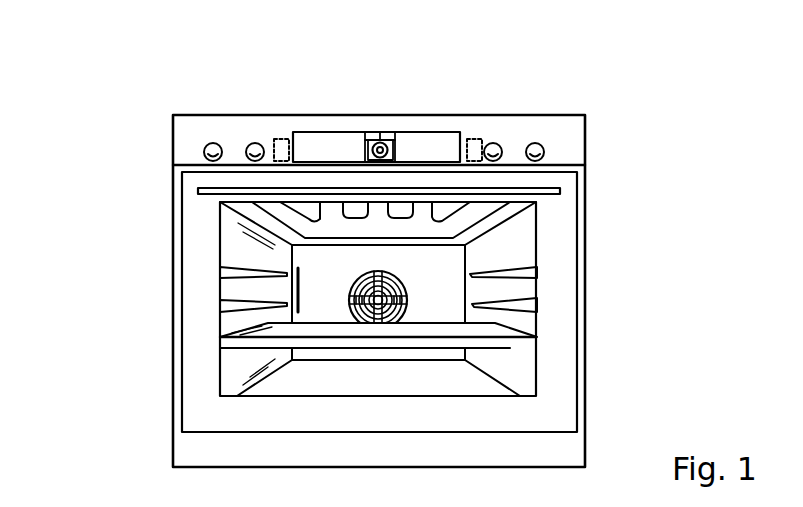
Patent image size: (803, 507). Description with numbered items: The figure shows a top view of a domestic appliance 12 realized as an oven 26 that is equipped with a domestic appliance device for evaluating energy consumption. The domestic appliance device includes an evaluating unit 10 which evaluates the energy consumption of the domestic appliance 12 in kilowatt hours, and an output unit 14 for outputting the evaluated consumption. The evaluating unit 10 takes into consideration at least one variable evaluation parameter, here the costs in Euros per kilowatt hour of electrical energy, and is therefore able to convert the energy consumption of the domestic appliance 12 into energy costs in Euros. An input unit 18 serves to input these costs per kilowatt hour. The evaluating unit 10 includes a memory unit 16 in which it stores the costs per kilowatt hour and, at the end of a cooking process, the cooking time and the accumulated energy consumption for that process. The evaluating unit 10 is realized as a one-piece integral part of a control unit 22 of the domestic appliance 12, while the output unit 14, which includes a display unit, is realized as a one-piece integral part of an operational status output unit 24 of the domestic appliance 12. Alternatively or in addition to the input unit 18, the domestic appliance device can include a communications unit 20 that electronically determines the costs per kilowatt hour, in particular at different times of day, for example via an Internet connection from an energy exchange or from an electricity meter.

The evaluating unit 10 is at (270, 115).
The domestic appliance 12 is at (145, 143).
The output unit 14 is at (332, 145).
The memory unit 16 is at (268, 146).
The input unit 18 is at (398, 132).
The communications unit 20 is at (481, 138).
The control unit 22 is at (283, 138).
The operational status output unit 24 is at (371, 140).
The oven 26 is at (607, 140).